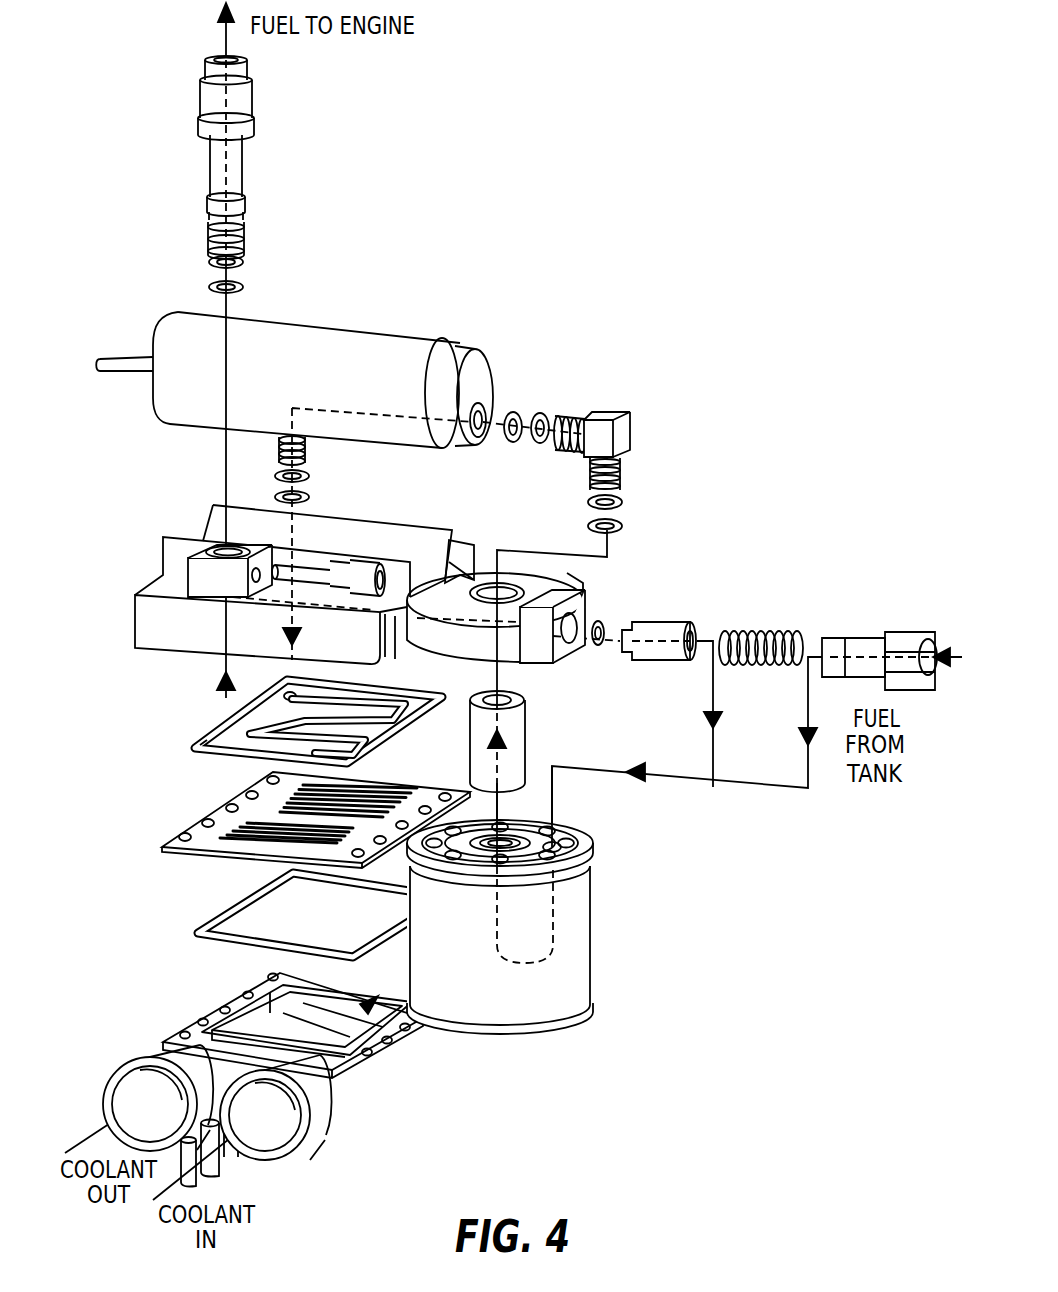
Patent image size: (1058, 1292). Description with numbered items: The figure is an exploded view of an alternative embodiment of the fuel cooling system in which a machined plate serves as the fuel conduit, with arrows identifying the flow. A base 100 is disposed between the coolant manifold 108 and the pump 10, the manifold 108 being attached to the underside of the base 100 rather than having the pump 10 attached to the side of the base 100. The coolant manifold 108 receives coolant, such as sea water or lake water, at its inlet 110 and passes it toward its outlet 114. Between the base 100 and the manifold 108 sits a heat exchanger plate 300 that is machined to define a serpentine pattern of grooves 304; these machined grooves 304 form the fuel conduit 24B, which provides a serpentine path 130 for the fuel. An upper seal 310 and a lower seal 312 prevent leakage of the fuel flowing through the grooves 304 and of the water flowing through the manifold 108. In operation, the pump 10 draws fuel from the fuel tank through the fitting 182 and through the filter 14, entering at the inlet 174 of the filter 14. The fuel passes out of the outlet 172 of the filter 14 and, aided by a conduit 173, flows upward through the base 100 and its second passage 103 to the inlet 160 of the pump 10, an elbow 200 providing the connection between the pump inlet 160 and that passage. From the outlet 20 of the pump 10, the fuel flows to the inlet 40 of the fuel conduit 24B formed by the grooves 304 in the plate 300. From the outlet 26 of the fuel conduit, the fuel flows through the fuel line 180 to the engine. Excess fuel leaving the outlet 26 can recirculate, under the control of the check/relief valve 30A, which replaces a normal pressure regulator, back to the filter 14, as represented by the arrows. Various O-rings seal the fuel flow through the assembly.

The pump 10 is at (337, 342).
The filter 14 is at (575, 950).
The outlet of the pump 20 is at (312, 450).
The fuel conduit 24B is at (382, 794).
The outlet of the fuel conduit 26 is at (213, 746).
The check/relief valve 30A is at (660, 627).
The inlet of the fuel conduit 40 is at (284, 692).
The base 100 is at (150, 630).
The second passage 103 is at (471, 543).
The coolant manifold 108 is at (387, 1057).
The inlet 110 is at (273, 1143).
The outlet 114 is at (125, 1088).
The serpentine path 130 is at (370, 737).
The inlet of the pump 160 is at (486, 418).
The outlet of the filter 172 is at (516, 838).
The conduit 173 is at (517, 731).
The inlet of the filter 174 is at (557, 843).
The fuel line 180 is at (238, 161).
The fitting 182 is at (863, 647).
The elbow 200 is at (605, 418).
The heat exchanger plate 300 is at (188, 849).
The serpentine grooves 304 is at (250, 840).
The upper seal 310 is at (212, 736).
The lower seal 312 is at (220, 946).